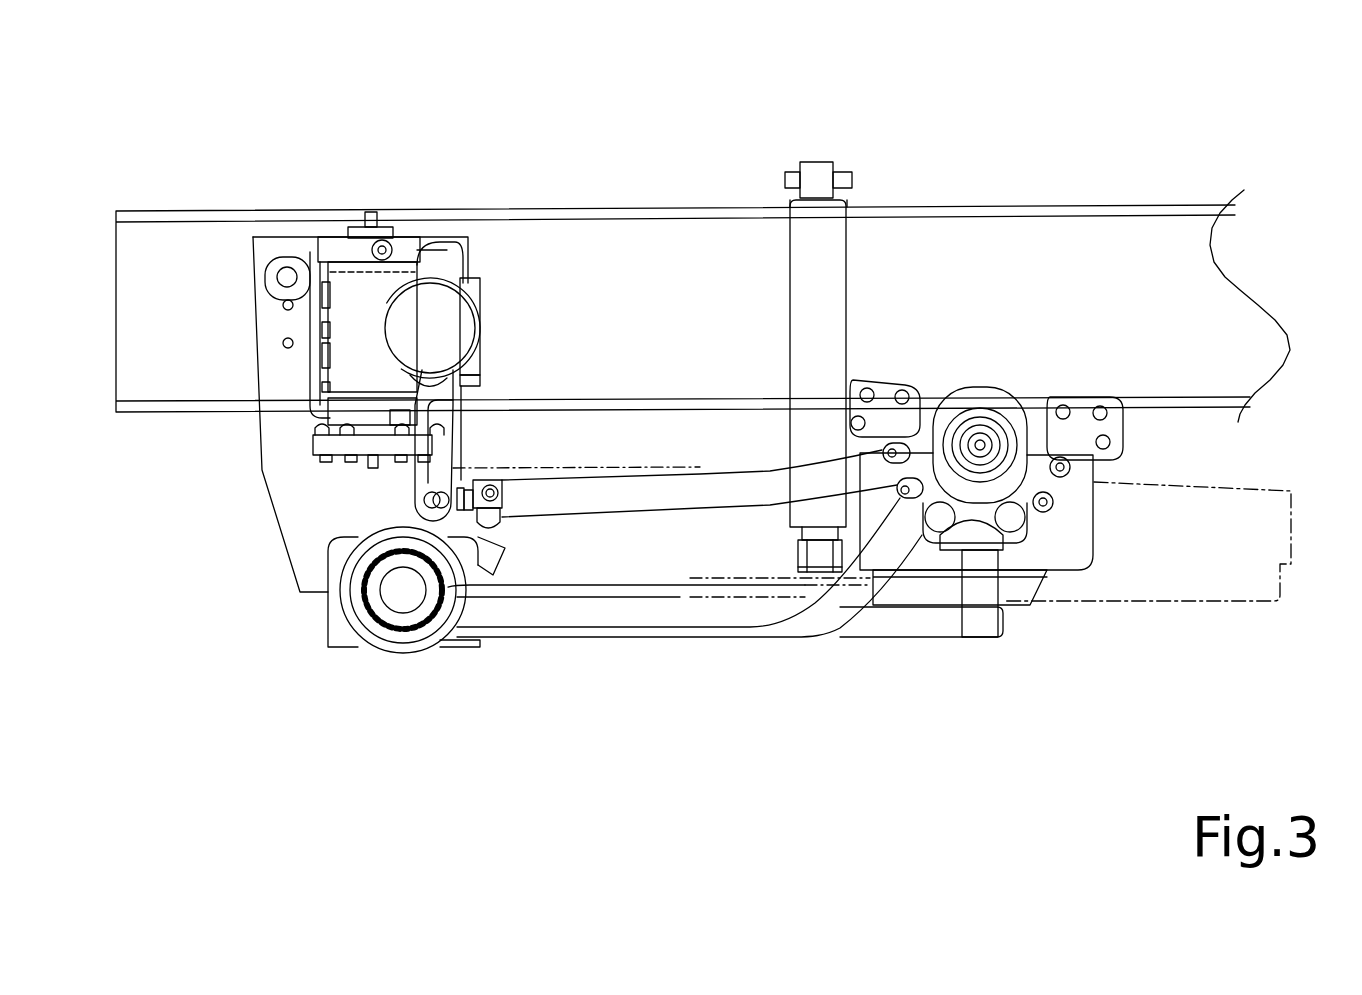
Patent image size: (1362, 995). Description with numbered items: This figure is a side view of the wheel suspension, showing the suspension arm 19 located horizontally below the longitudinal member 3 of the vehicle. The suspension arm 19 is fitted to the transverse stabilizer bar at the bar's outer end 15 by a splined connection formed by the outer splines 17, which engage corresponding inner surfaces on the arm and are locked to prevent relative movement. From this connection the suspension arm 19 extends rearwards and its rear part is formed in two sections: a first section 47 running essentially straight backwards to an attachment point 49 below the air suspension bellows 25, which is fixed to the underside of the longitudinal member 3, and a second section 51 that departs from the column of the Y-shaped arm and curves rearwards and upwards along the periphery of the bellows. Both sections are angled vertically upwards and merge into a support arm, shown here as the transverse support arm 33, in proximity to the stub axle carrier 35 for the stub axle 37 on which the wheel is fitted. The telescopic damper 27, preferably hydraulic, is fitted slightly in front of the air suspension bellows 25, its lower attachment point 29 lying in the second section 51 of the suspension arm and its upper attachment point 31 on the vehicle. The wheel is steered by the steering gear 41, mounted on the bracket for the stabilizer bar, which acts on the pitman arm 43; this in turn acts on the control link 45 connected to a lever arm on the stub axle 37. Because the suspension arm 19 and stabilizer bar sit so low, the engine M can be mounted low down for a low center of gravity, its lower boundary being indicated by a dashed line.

The longitudinal member 3 is at (1128, 328).
The outer end of the stabilizer bar 15 is at (405, 620).
The outer splines 17 is at (373, 615).
The suspension arm 19 is at (665, 612).
The air suspension bellows 25 is at (1083, 517).
The telescopic damper 27 is at (833, 250).
The lower attachment point of the telescopic damper 29 is at (820, 563).
The upper attachment point 31 is at (820, 170).
The transverse support arm 33 is at (982, 597).
The stub axle carrier 35 is at (987, 377).
The stub axle 37 is at (933, 403).
The steering gear 41 is at (345, 360).
The pitman arm 43 is at (427, 475).
The control link 45 is at (618, 498).
The first section 47 is at (908, 623).
The attachment point 49 is at (1027, 577).
The second section 51 is at (863, 577).
The engine M is at (1237, 640).